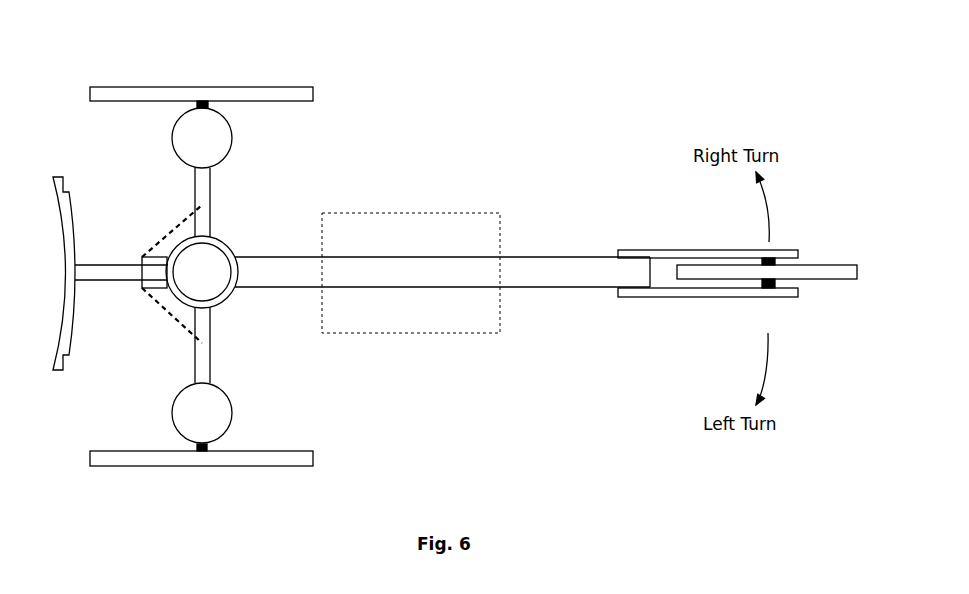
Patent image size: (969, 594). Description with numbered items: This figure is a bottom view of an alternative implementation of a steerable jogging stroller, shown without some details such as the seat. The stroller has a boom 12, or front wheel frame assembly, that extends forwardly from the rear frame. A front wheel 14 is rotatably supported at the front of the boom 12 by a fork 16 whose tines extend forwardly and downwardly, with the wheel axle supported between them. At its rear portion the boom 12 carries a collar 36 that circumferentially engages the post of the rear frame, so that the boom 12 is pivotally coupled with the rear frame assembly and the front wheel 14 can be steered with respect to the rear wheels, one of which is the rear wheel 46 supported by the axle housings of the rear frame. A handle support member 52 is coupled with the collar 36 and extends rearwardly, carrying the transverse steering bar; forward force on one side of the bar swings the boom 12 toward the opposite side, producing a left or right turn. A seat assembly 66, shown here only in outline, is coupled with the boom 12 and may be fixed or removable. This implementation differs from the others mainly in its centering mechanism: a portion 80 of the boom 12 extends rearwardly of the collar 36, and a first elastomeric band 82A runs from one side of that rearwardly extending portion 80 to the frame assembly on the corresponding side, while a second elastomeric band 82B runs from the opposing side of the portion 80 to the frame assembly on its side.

The boom 12 is at (508, 257).
The front wheel 14 is at (828, 265).
The fork 16 is at (708, 250).
The collar 36 is at (224, 302).
The rear wheel 46 is at (202, 87).
The handle support member 52 is at (90, 282).
The seat assembly 66 is at (366, 213).
The rearwardly extending portion of the boom 80 is at (158, 255).
The first elastomeric band 82A is at (150, 306).
The second elastomeric band 82B is at (152, 257).